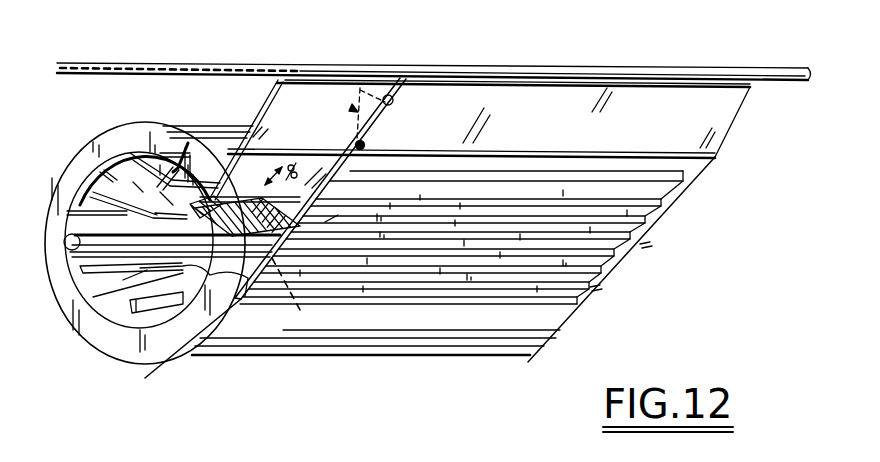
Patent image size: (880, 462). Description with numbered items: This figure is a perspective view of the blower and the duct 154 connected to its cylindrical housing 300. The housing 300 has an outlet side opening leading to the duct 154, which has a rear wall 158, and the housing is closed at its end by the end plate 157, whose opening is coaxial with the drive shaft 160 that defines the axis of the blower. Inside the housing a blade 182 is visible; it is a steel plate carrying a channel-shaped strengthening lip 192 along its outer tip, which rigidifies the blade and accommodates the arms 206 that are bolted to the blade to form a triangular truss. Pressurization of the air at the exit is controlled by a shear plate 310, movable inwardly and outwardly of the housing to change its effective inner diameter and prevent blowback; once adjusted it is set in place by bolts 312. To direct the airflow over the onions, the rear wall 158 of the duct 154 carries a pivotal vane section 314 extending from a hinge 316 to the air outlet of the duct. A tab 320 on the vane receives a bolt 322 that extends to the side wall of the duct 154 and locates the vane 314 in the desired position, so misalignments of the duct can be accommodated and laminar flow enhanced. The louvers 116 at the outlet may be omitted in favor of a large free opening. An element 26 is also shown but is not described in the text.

The support rail 26 is at (182, 63).
The shear plate 310 is at (256, 76).
The bolts 312 is at (254, 82).
The drive shaft 160 is at (335, 80).
The rear wall 158 is at (168, 124).
The blade 182 is at (93, 163).
The tab 320 is at (356, 140).
The bolt 322 is at (355, 146).
The hinge 316 is at (363, 145).
The pivotal vane section 314 is at (546, 120).
The duct 154 is at (633, 247).
The end plate 157 is at (70, 313).
The cylindrical housing 300 is at (160, 364).
The strengthening lip 192 is at (243, 296).
The arms 206 is at (300, 310).
The louvers 116 is at (503, 258).